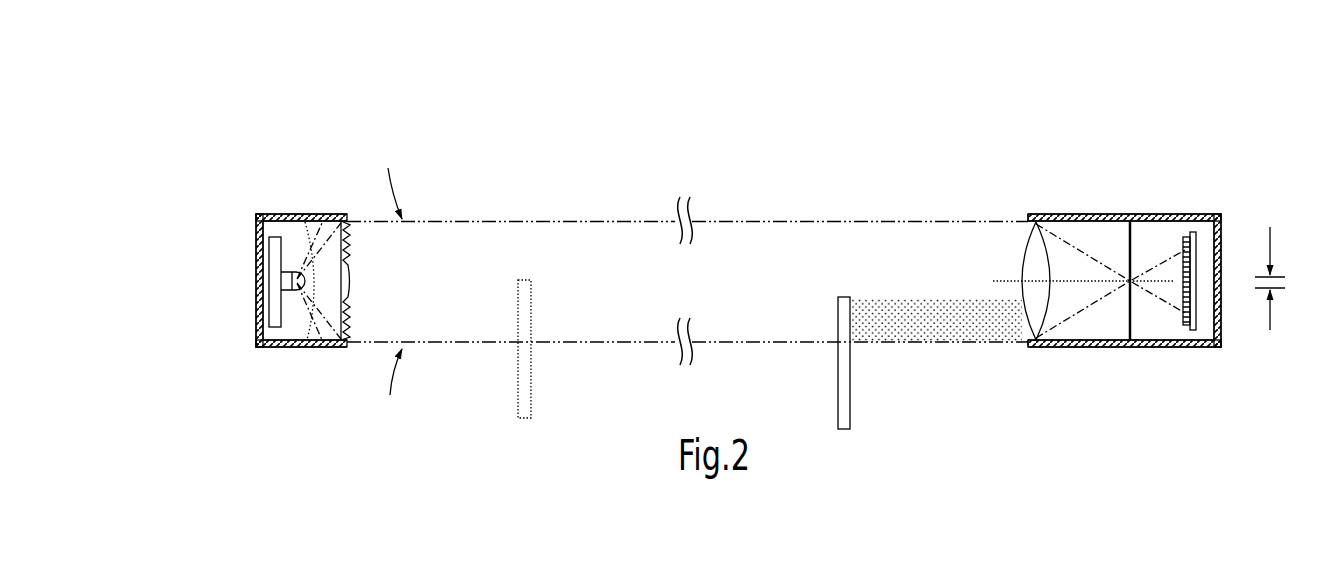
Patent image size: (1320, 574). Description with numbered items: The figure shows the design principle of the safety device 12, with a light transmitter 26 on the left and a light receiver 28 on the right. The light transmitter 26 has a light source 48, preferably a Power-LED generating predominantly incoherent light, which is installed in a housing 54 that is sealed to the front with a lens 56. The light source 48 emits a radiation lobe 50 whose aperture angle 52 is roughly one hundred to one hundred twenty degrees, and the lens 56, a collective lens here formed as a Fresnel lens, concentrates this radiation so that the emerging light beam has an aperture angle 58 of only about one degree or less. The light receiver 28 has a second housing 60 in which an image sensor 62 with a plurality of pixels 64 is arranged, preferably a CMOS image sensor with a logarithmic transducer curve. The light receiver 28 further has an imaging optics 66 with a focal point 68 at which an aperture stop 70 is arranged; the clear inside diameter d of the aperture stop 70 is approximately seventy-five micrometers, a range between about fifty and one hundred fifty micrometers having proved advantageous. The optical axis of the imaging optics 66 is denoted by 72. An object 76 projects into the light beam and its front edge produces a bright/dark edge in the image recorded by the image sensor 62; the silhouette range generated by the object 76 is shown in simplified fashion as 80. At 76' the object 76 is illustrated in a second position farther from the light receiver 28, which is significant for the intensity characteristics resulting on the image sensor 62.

The safety device 12 is at (742, 184).
The light transmitter 26 is at (258, 225).
The light receiver 28 is at (1202, 206).
The light source 48 is at (287, 281).
The radiation lobe 50 is at (311, 305).
The aperture angle 52 is at (318, 282).
The housing 54 is at (256, 236).
The lens 56 is at (350, 268).
The aperture angle 58 is at (393, 180).
The second housing 60 is at (1024, 286).
The image sensor 62 is at (1197, 318).
The pixels 64 is at (1183, 312).
The imaging optics 66 is at (1020, 250).
The focal point 68 is at (1122, 266).
The aperture stop 70 is at (1128, 222).
The optical axis 72 is at (990, 280).
The object 76 is at (888, 373).
The object in second position 76' is at (573, 357).
The silhouette range 80 is at (955, 323).
The clear inside diameter d is at (1280, 278).